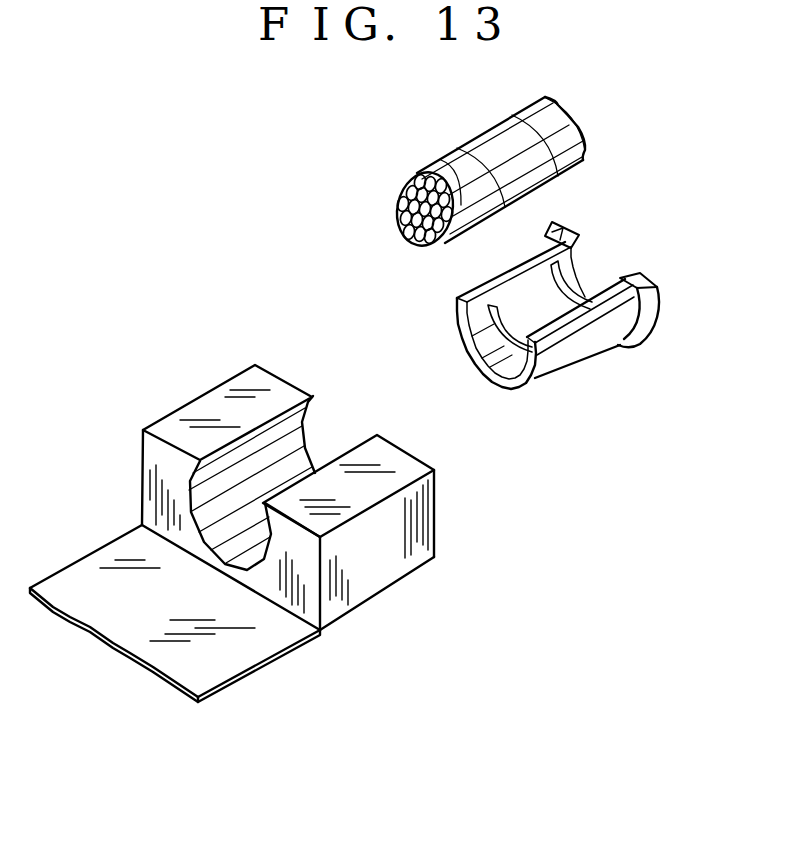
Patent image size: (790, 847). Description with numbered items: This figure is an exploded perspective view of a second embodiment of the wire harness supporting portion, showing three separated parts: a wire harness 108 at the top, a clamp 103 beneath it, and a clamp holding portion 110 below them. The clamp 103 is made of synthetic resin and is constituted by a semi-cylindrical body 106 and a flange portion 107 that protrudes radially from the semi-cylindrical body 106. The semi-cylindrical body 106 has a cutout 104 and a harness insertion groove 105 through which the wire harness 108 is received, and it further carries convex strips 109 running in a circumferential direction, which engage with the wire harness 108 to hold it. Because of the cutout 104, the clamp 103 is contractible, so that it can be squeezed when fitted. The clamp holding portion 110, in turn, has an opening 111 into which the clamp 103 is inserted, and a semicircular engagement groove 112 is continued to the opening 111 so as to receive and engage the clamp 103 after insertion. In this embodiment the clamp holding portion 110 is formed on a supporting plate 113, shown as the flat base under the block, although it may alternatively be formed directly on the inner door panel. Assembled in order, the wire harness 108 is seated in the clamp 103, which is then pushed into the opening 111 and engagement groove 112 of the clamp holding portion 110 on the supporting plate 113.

The clamp 103 is at (562, 392).
The cutout 104 is at (612, 268).
The harness insertion groove 105 is at (483, 365).
The semi-cylindrical body 106 is at (585, 342).
The flange portion 107 is at (660, 305).
The wire harness 108 is at (425, 172).
The convex strips 109 is at (490, 328).
The clamp holding portion 110 is at (446, 521).
The opening 111 is at (352, 445).
The semicircular engagement groove 112 is at (231, 518).
The supporting plate 113 is at (290, 647).